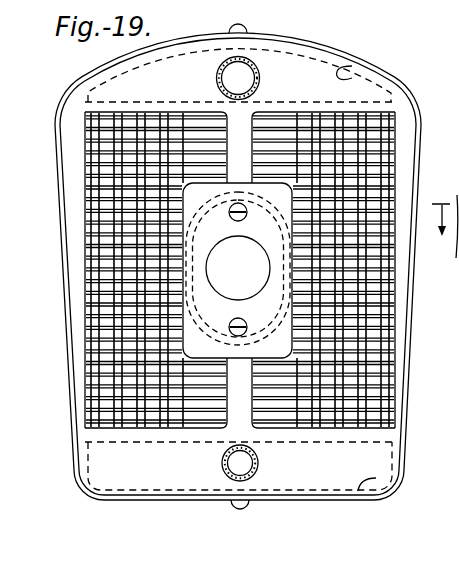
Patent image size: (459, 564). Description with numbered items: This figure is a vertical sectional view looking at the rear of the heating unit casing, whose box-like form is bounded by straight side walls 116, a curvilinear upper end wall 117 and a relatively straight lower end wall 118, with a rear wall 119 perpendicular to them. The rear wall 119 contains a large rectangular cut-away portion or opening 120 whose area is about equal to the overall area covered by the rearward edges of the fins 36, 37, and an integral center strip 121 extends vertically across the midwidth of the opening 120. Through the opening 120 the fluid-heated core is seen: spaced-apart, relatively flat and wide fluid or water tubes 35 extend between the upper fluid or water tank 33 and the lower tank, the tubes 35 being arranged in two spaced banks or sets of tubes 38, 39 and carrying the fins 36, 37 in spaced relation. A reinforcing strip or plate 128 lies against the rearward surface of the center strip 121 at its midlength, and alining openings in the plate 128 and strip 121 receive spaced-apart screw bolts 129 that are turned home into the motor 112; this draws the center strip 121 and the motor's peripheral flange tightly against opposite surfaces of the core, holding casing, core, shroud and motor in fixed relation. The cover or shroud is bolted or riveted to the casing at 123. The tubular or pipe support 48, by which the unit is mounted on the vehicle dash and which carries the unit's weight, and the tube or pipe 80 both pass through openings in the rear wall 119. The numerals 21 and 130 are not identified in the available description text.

The curvilinear upper end wall 117 is at (308, 44).
The straight side walls 116 is at (73, 393).
The rear wall 119 is at (72, 210).
The relatively straight lower end wall 118 is at (295, 502).
The upper fluid or water tank 33 is at (357, 71).
The bolt or rivet 123 is at (243, 29).
The tubular or pipe support 48 is at (260, 80).
The tube or pipe 80 is at (258, 462).
The rectangular cut-away portion or opening 120 is at (396, 252).
The fins 36 is at (376, 122).
The center strip 121 is at (238, 138).
The fluid or water tubes 35 is at (88, 182).
The bank or set of tubes 38 is at (97, 235).
The fins 37 is at (118, 266).
The bank or set of tubes 39 is at (367, 201).
The reinforcing strip or plate 128 is at (181, 328).
The motor 112 is at (238, 268).
The screw bolts 129 is at (245, 219).
The viewing direction arrow 21 is at (443, 212).
The adjacent figure element 130 is at (448, 140).